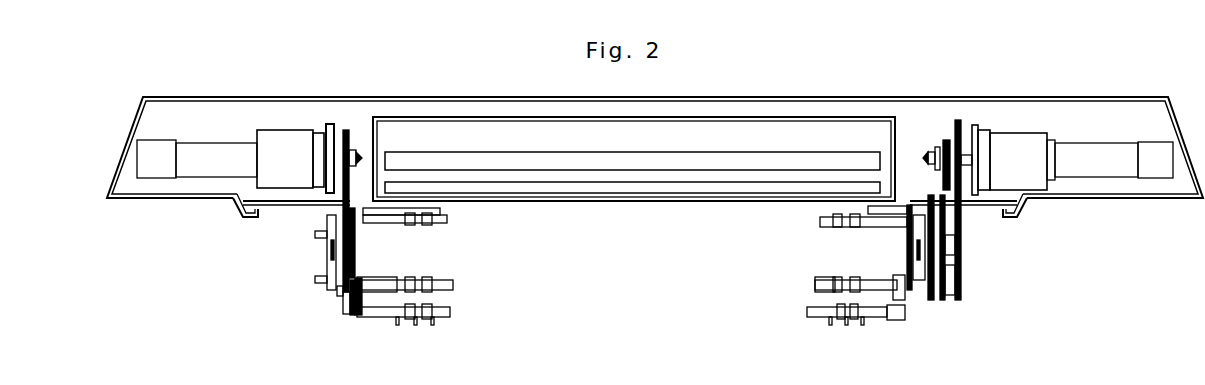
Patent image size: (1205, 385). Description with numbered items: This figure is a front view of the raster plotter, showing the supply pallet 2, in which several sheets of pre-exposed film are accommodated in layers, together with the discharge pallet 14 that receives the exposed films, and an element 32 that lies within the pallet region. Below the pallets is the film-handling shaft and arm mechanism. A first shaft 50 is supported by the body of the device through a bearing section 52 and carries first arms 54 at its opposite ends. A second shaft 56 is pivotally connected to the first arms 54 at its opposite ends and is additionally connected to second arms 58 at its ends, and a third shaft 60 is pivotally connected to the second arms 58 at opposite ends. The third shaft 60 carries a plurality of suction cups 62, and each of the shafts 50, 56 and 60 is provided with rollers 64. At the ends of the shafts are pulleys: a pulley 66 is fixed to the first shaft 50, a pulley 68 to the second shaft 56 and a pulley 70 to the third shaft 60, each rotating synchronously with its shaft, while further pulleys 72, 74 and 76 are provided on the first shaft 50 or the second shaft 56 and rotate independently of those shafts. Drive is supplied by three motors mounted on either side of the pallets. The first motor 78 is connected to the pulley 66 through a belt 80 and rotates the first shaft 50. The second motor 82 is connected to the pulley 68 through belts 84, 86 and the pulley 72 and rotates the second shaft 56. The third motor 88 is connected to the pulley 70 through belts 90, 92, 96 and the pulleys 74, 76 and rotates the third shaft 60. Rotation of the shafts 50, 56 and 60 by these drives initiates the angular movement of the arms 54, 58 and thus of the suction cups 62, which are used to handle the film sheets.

The supply pallet 2 is at (597, 193).
The discharge pallet 14 is at (578, 160).
The reflector plate 32 is at (880, 141).
The first shaft 50 is at (405, 230).
The bearing section 52 is at (440, 211).
The first arms 54 is at (325, 250).
The second shaft 56 is at (400, 280).
The second arms 58 is at (357, 312).
The third shaft 60 is at (368, 318).
The suction cups 62 is at (435, 322).
The rollers 64 is at (420, 228).
The pulley 66 is at (960, 240).
The pulley 68 is at (945, 290).
The pulley 70 is at (345, 300).
The pulley 72 is at (940, 245).
The pulley 74 is at (305, 215).
The pulley 76 is at (362, 280).
The first motor 78 is at (992, 132).
The belt 80 is at (1010, 222).
The second motor 82 is at (960, 122).
The belt 84 is at (922, 200).
The belt 86 is at (945, 270).
The third motor 88 is at (283, 140).
The belt 90 is at (355, 178).
The belt 92 is at (350, 250).
The belt 96 is at (345, 292).